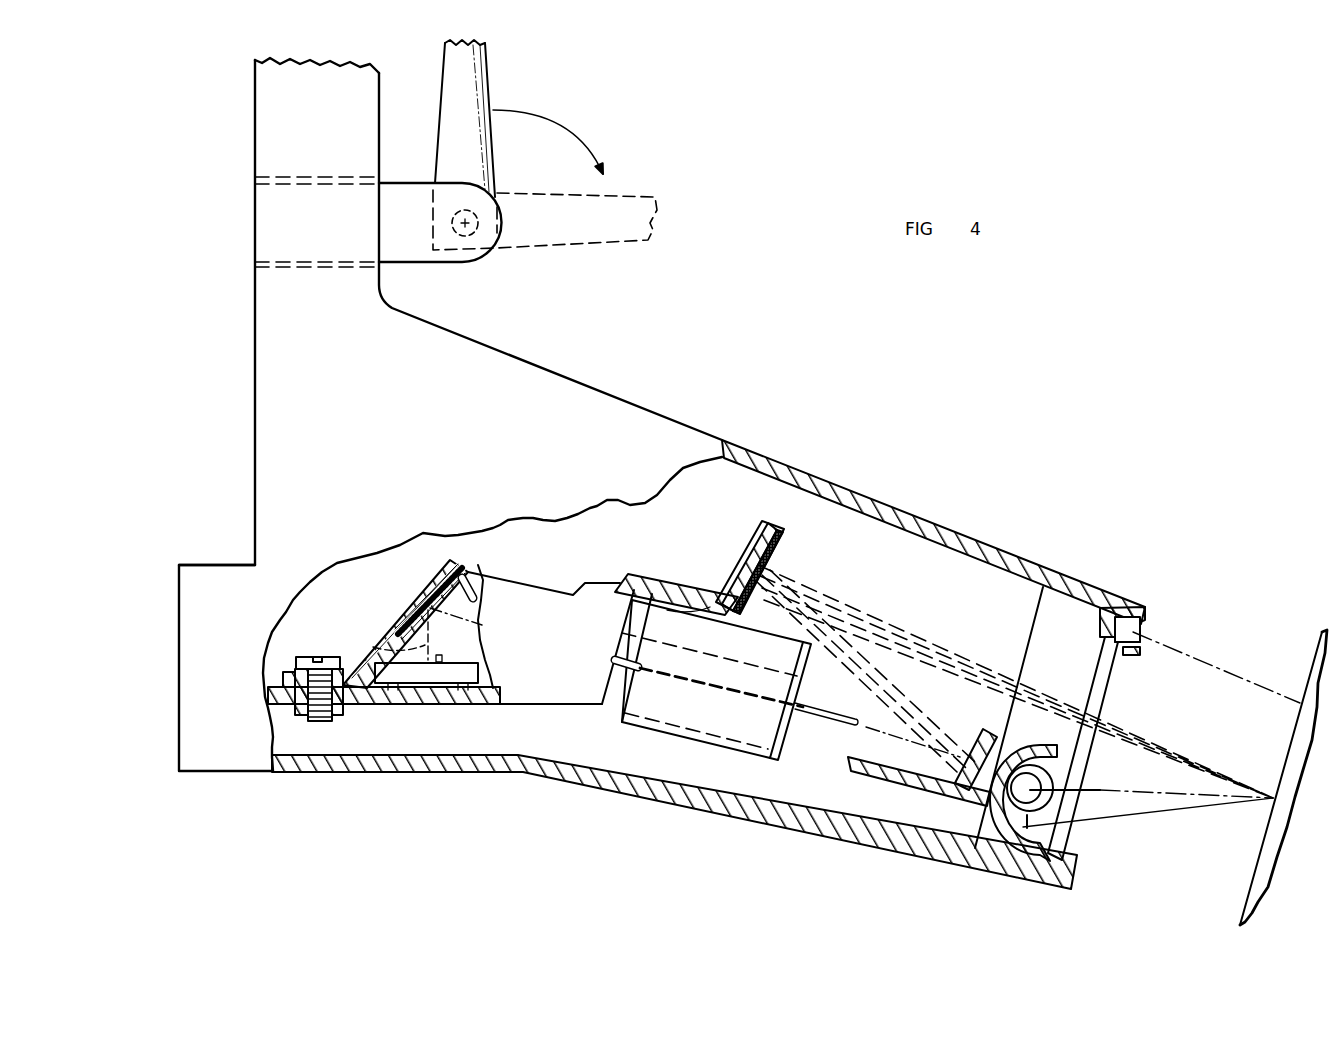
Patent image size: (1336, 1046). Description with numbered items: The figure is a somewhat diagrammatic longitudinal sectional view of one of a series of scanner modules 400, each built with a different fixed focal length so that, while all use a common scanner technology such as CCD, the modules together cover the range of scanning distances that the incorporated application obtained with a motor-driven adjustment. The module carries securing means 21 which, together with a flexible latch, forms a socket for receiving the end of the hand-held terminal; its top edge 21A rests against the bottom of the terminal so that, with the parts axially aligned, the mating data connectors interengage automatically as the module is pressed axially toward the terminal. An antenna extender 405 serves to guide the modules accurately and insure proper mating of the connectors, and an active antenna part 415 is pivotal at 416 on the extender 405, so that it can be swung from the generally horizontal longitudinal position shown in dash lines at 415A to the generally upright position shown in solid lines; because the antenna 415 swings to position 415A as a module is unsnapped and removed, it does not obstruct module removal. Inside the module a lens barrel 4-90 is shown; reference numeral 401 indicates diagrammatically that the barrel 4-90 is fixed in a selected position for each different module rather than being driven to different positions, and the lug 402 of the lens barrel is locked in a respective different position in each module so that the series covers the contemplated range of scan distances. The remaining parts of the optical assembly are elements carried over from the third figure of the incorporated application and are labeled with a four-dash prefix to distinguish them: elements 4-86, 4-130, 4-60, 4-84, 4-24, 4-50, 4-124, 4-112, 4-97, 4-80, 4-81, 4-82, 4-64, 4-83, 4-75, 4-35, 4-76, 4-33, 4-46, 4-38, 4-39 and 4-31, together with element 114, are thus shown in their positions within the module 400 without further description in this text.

The securing means 21 is at (195, 642).
The top edge 21A is at (200, 562).
The antenna extender 405 is at (413, 257).
The active antenna part 415 is at (488, 72).
The longitudinal antenna position 415A is at (577, 245).
The pivot 416 is at (467, 212).
The upper tube wall 4-86 is at (867, 492).
The lens barrel 4-90 is at (698, 740).
The screw 4-130 is at (357, 652).
The mounting plate 4-60 is at (357, 640).
The serrated strip 4-84 is at (405, 600).
The housing roof 4-24 is at (500, 587).
The lens 4-50 is at (440, 660).
The circuit board 4-124 is at (472, 673).
The lug 402 is at (668, 580).
The fixing indication 401 is at (640, 593).
The slot 114 is at (612, 663).
The lens element 4-112 is at (718, 692).
The end cap 4-97 is at (780, 740).
The rod 4-80 is at (893, 683).
The optical axis 4-81 is at (903, 738).
The display element 4-82 is at (772, 555).
The light rays 4-64 is at (868, 620).
The mirror 4-83 is at (960, 730).
The curved mount 4-75 is at (1007, 837).
The eyepiece lens 4-35 is at (1053, 777).
The light path 4-76 is at (1027, 820).
The window plate 4-33 is at (1095, 683).
The window 4-46 is at (1097, 706).
The end fitting 4-38 is at (1147, 625).
The scanner module 400 is at (1158, 628).
The sight line 4-39 is at (1218, 665).
The eye 4-31 is at (1265, 823).